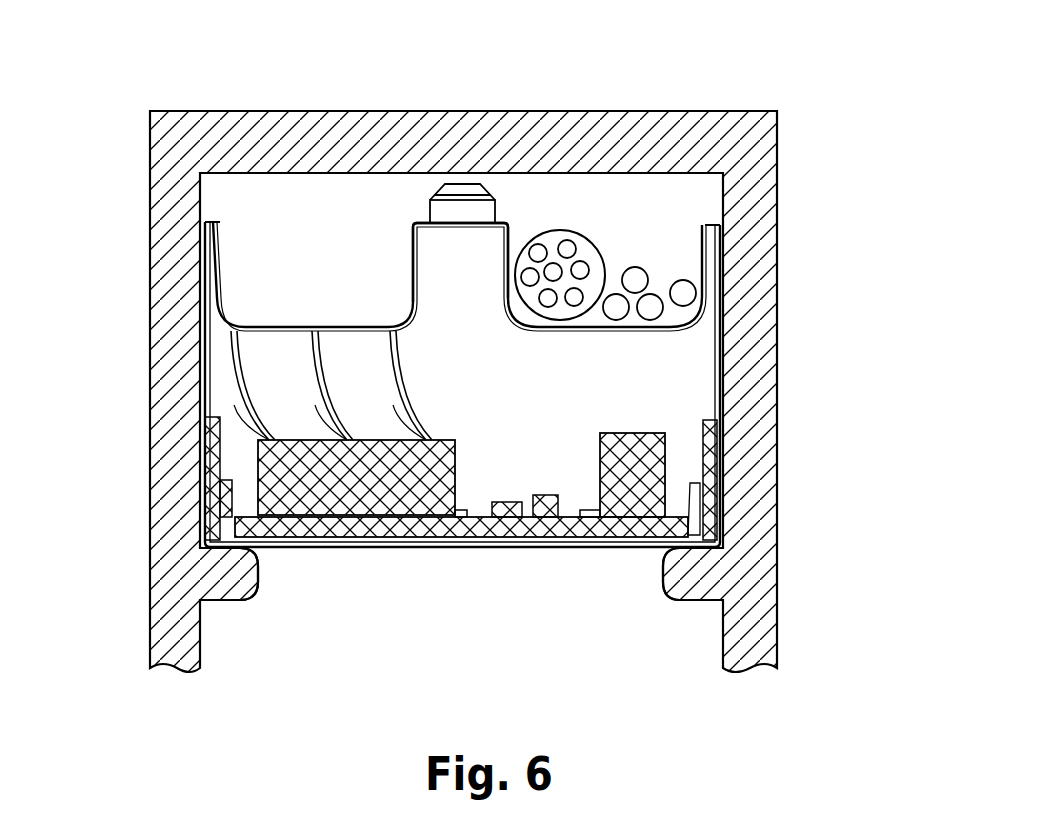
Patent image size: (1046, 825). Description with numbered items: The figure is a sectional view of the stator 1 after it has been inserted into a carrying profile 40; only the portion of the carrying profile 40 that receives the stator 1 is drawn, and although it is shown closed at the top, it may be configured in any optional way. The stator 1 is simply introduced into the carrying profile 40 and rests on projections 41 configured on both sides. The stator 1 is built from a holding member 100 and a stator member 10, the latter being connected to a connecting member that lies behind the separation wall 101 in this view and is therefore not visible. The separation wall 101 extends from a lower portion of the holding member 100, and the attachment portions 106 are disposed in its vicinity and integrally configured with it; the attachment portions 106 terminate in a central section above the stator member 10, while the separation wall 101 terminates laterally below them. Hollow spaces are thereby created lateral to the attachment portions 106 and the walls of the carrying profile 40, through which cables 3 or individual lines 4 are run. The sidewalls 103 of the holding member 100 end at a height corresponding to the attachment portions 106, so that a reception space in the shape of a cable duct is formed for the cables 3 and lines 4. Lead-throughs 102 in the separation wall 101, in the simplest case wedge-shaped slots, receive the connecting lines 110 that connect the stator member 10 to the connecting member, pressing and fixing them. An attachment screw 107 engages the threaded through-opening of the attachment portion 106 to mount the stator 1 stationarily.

The stator 1 is at (346, 296).
The cables 3 is at (575, 232).
The individual lines 4 is at (652, 296).
The stator member 10 is at (690, 477).
The carrying profile 40 is at (779, 194).
The projections 41 is at (694, 584).
The holding member 100 is at (733, 367).
The separation wall 101 is at (672, 420).
The lead-throughs 102 is at (393, 333).
The sidewalls 103 is at (222, 324).
The attachment portions 106 is at (414, 233).
The attachment screw 107 is at (483, 185).
The connecting line 110 is at (420, 415).